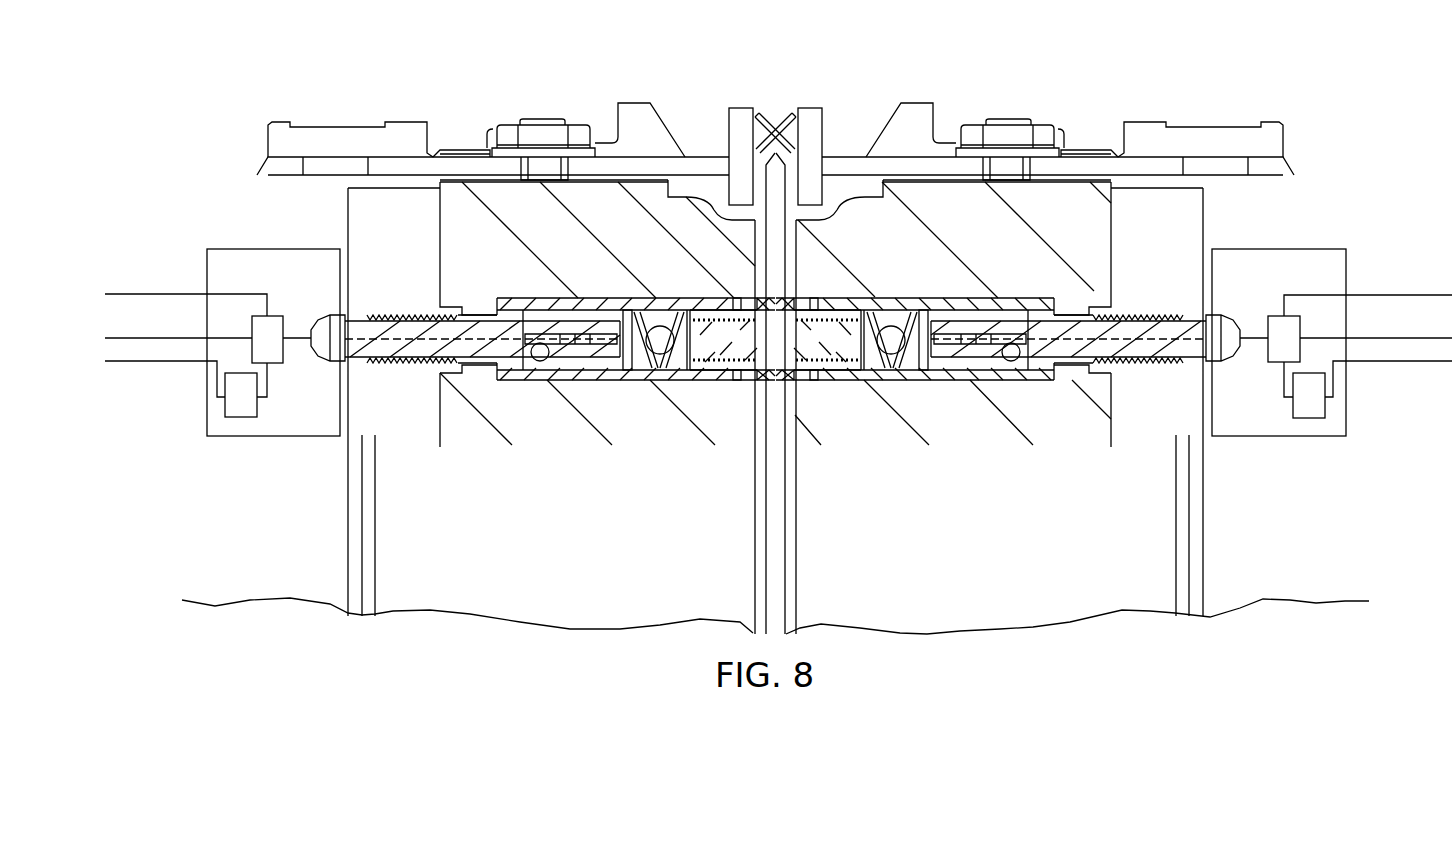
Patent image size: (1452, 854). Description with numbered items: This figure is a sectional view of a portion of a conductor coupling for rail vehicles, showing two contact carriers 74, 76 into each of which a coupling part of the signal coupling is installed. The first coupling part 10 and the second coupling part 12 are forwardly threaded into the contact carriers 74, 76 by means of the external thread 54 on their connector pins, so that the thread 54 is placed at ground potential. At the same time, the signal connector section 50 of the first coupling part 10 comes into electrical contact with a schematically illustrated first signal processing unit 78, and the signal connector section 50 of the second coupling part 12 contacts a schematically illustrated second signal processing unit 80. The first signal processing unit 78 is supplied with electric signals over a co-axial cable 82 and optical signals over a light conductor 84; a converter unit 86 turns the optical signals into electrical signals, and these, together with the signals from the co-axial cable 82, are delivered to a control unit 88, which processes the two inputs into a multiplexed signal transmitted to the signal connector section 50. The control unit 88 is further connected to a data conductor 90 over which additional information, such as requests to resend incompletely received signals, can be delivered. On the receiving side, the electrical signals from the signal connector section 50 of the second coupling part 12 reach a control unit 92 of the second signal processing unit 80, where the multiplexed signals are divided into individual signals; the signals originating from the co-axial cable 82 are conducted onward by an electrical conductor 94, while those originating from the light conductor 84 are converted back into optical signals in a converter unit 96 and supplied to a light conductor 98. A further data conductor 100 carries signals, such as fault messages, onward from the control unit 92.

The first coupling part 10 is at (918, 401).
The second coupling part 12 is at (599, 396).
The signal connector section 50 is at (332, 318).
The external thread 54 is at (403, 313).
The contact carrier 74 is at (1034, 95).
The contact carrier 76 is at (525, 84).
The first signal processing unit 78 is at (1288, 249).
The second signal processing unit 80 is at (227, 249).
The co-axial cable 82 is at (1405, 338).
The light conductor 84 is at (1410, 362).
The converter unit 86 is at (1309, 415).
The control unit 88 is at (1268, 342).
The data conductor 90 is at (1370, 295).
The control unit 92 is at (272, 347).
The electrical conductor 94 is at (145, 338).
The converter unit 96 is at (242, 413).
The light conductor 98 is at (168, 362).
The data conductor 100 is at (141, 294).